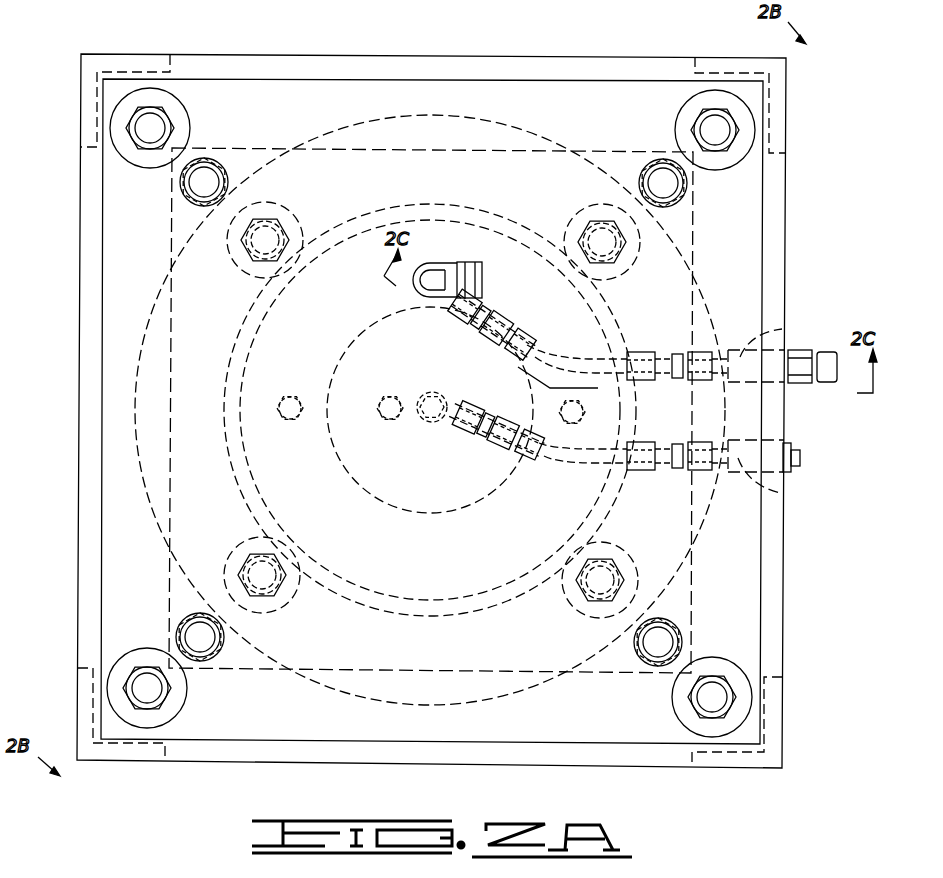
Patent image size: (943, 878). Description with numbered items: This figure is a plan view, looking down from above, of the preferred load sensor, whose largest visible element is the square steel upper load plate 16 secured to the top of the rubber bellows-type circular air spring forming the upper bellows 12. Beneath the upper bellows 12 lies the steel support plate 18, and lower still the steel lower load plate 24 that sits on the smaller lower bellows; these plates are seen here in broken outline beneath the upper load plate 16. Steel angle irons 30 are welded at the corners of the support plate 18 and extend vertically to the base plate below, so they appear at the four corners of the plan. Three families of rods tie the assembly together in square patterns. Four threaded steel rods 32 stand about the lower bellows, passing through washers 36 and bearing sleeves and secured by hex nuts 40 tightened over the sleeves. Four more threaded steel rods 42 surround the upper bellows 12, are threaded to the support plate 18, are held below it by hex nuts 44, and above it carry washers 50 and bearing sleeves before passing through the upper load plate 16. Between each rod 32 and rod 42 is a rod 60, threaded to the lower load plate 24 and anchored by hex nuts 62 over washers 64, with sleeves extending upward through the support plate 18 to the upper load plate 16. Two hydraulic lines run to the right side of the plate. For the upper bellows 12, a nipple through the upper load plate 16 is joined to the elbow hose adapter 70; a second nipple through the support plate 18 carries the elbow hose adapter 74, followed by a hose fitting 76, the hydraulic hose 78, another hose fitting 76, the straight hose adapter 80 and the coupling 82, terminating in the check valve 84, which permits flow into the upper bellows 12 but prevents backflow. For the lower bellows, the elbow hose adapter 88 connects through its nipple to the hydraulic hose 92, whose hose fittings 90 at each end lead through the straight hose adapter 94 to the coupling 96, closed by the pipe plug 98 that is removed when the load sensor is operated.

The upper bellows 12 is at (437, 108).
The upper load plate 16 is at (270, 97).
The support plate 18 is at (227, 62).
The lower load plate 24 is at (604, 143).
The angle irons 30 is at (132, 47).
The threaded steel rods 32 is at (271, 579).
The washers 36 is at (288, 589).
The hex nuts 40 is at (279, 593).
The threaded steel rods 42 is at (763, 130).
The hex nuts 44 is at (758, 123).
The washers 50 is at (746, 100).
The rods 60 is at (688, 636).
The hex nuts 62 is at (655, 669).
The washers 64 is at (627, 660).
The elbow hose adapter 70 is at (440, 277).
The elbow hose adapter 74 is at (498, 298).
The hose fitting 76 is at (522, 323).
The hydraulic hose 78 is at (585, 360).
The straight hose adapter 80 is at (713, 328).
The coupling 82 is at (786, 335).
The check valve 84 is at (828, 378).
The elbow hose adapter 88 is at (450, 392).
The hose fittings 90 is at (627, 472).
The hydraulic hose 92 is at (545, 468).
The straight hose adapter 94 is at (717, 486).
The coupling 96 is at (783, 490).
The pipe plug 98 is at (802, 457).